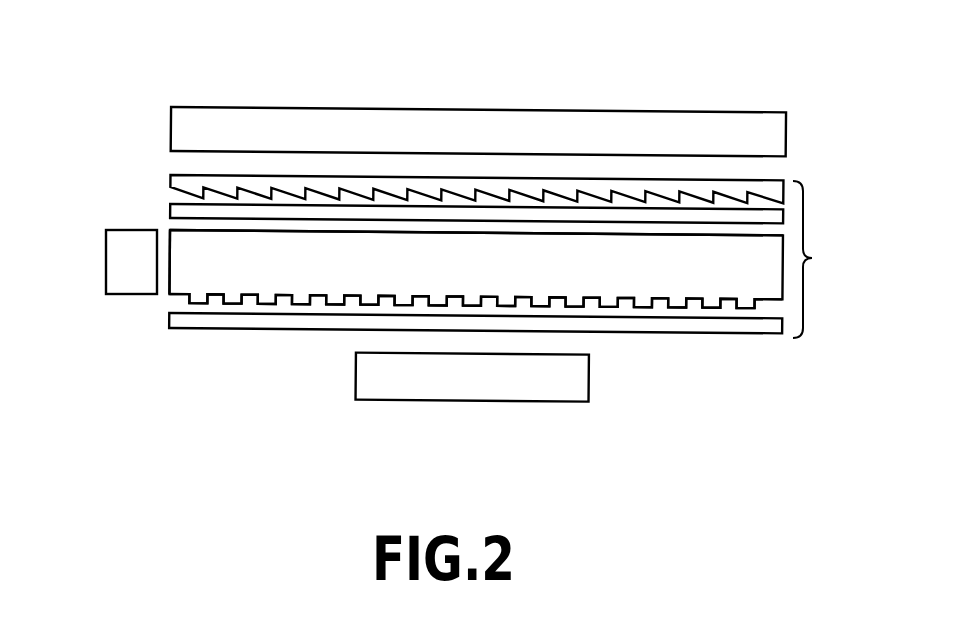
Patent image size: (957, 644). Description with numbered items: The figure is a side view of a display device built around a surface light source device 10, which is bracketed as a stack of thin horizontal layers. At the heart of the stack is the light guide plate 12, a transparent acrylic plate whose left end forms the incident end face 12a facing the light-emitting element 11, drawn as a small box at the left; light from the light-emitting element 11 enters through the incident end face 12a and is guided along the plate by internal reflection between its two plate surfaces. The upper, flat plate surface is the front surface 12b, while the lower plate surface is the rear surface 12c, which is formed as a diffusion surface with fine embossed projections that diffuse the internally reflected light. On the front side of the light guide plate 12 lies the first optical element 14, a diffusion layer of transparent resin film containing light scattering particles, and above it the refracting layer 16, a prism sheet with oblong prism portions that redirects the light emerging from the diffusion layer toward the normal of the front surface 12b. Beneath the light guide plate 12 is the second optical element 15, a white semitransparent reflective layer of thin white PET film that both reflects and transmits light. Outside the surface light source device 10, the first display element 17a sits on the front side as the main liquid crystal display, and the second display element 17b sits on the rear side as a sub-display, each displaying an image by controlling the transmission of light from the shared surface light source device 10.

The surface light source device 10 is at (462, 239).
The light-emitting element 11 is at (125, 260).
The light guide plate 12 is at (730, 280).
The incident end face 12a is at (167, 279).
The front surface 12b is at (193, 227).
The rear surface 12c is at (623, 298).
The first optical element 14 is at (260, 210).
The second optical element 15 is at (262, 320).
The refracting layer 16 is at (383, 175).
The first display element 17a is at (717, 137).
The second display element 17b is at (483, 387).